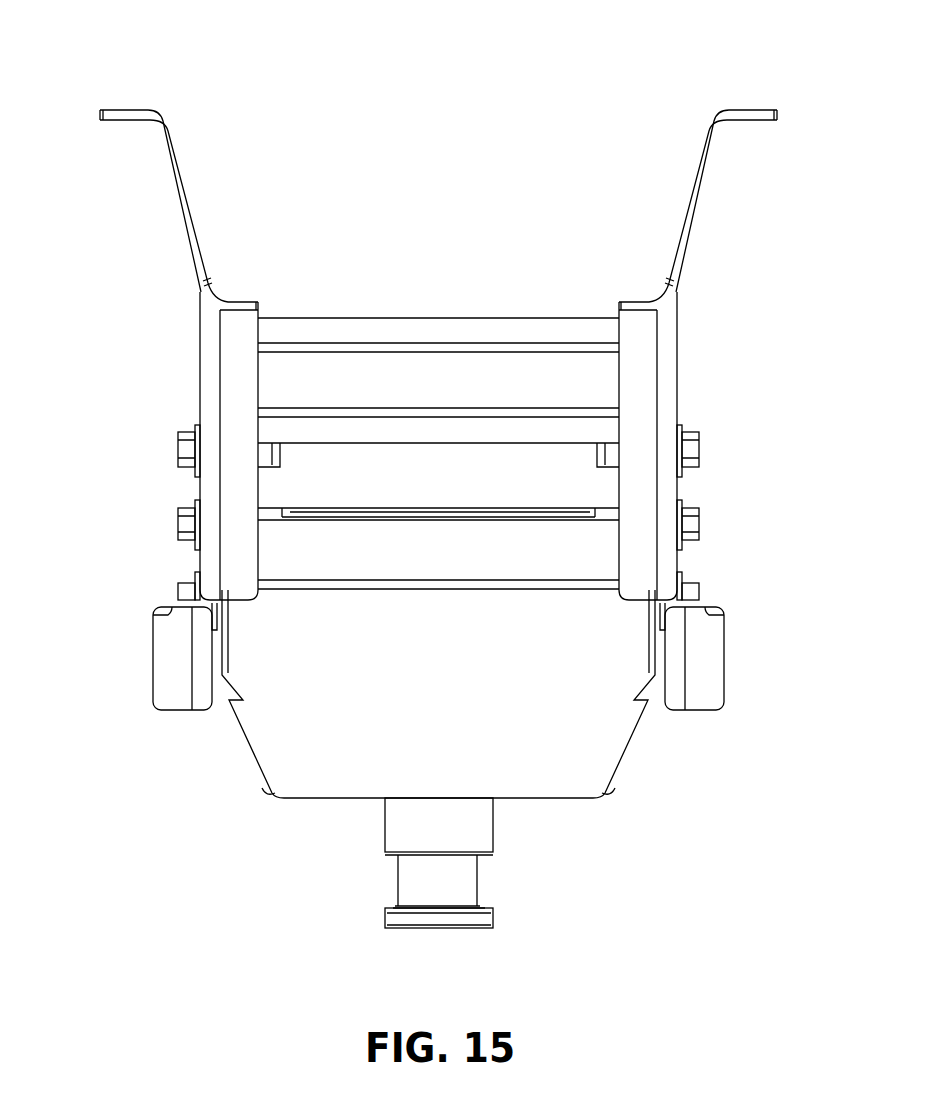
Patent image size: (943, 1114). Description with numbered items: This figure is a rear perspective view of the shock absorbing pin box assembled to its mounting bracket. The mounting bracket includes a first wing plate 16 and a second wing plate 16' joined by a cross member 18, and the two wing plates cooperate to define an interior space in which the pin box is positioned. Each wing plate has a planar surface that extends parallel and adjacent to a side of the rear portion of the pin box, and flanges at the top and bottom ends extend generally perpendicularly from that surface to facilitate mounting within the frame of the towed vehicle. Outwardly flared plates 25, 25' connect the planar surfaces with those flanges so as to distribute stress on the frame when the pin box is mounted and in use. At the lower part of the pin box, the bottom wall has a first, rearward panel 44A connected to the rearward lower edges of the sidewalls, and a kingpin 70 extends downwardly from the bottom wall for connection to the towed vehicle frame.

The first wing plate 16 is at (712, 446).
The second wing plate 16' is at (164, 446).
The cross member 18 is at (440, 402).
The outwardly flared plate 25 is at (724, 206).
The outwardly flared plate 25' is at (139, 206).
The first panel 44A is at (452, 687).
The kingpin 70 is at (450, 890).